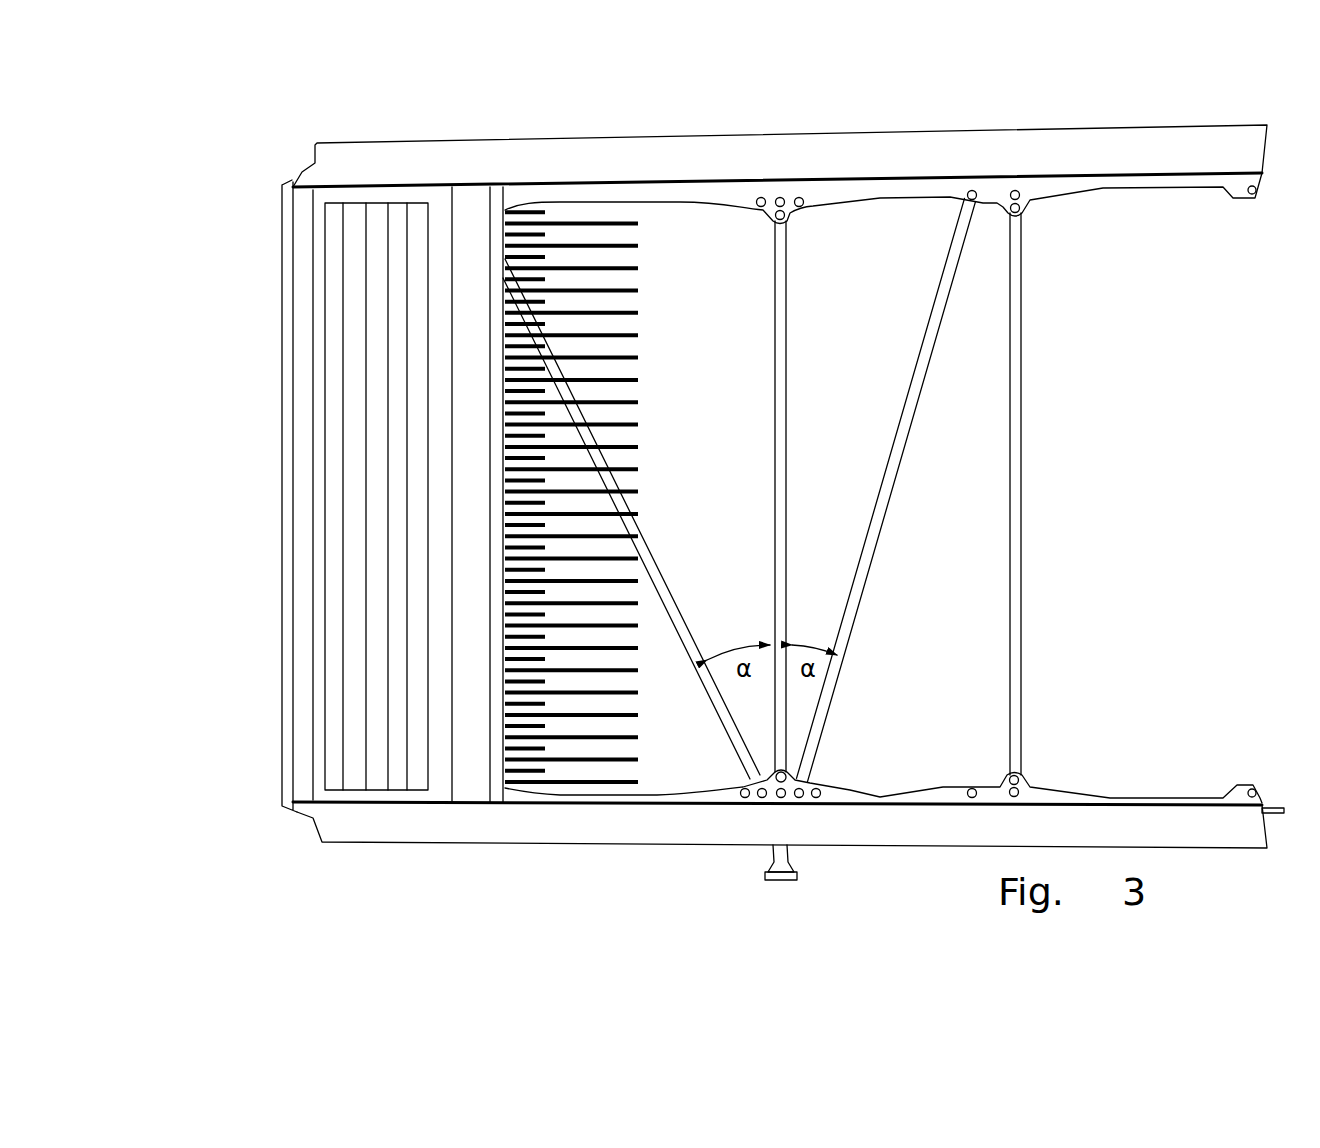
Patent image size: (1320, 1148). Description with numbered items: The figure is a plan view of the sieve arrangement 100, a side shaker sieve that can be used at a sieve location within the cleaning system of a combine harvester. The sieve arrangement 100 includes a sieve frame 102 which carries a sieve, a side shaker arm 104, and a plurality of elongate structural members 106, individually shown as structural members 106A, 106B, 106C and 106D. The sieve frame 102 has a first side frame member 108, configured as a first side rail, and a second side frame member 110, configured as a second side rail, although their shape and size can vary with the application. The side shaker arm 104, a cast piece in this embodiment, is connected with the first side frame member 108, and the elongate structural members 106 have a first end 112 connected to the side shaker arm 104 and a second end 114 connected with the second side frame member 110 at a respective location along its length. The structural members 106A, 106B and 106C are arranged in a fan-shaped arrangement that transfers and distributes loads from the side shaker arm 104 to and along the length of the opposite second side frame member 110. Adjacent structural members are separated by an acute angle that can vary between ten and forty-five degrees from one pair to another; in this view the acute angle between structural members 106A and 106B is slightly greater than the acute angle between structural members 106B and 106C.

The sieve arrangement 100 is at (300, 165).
The sieve frame 102 is at (1133, 797).
The side shaker arm 104 is at (787, 878).
The elongate structural members 106 is at (879, 484).
The first structural member 106A is at (660, 575).
The second structural member 106B is at (785, 453).
The third structural member 106C is at (880, 537).
The fourth structural member 106D is at (1022, 397).
The first side frame member 108 is at (690, 835).
The second side frame member 110 is at (688, 145).
The first end 112 is at (757, 777).
The second end 114 is at (787, 223).